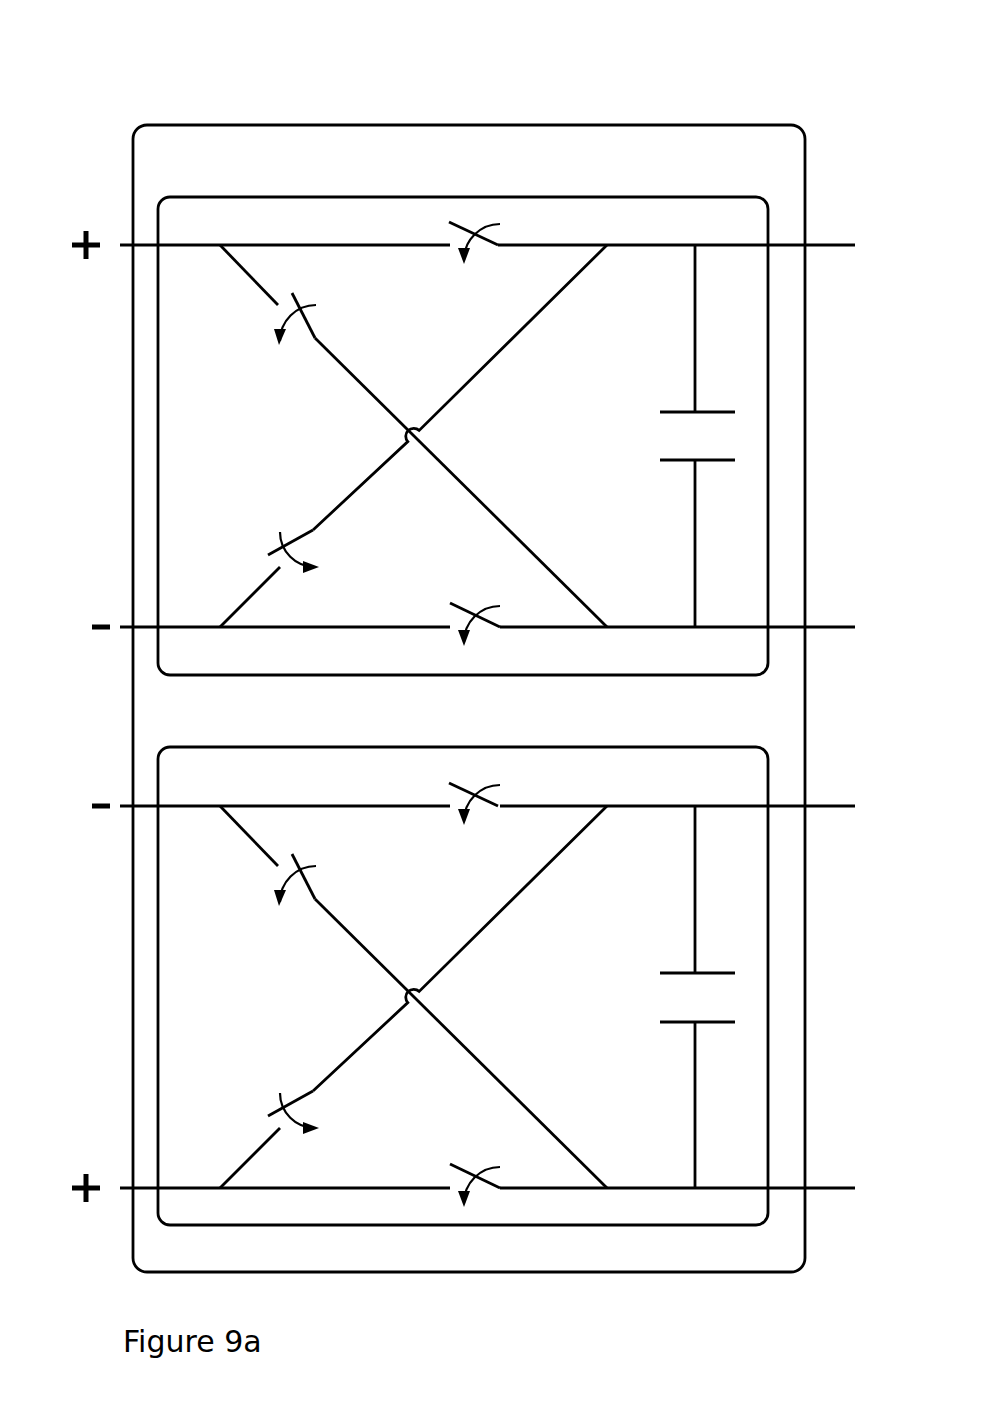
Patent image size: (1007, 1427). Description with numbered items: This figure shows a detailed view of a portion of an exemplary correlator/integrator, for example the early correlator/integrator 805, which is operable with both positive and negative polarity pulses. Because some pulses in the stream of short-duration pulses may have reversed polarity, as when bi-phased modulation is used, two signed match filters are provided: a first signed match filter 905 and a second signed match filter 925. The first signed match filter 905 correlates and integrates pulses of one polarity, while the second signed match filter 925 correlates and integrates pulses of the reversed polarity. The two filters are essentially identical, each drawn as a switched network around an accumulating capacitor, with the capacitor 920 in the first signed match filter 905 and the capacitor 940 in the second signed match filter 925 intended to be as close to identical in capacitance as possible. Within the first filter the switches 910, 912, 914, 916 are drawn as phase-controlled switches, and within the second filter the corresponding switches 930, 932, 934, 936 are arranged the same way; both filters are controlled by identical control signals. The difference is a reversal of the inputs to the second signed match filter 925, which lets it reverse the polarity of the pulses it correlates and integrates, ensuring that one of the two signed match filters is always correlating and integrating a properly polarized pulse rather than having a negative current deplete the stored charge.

The early correlator/integrator 805 is at (168, 90).
The first signed match filter 905 is at (598, 197).
The first phase switch 910 is at (447, 215).
The first phase switch 912 is at (448, 597).
The second phase switch 914 is at (292, 290).
The second phase switch 916 is at (262, 548).
The capacitor 920 is at (670, 405).
The second signed match filter 925 is at (745, 746).
The first phase switch 930 is at (448, 778).
The first phase switch 932 is at (448, 1160).
The second phase switch 934 is at (293, 852).
The second phase switch 936 is at (263, 1110).
The capacitor 940 is at (670, 966).